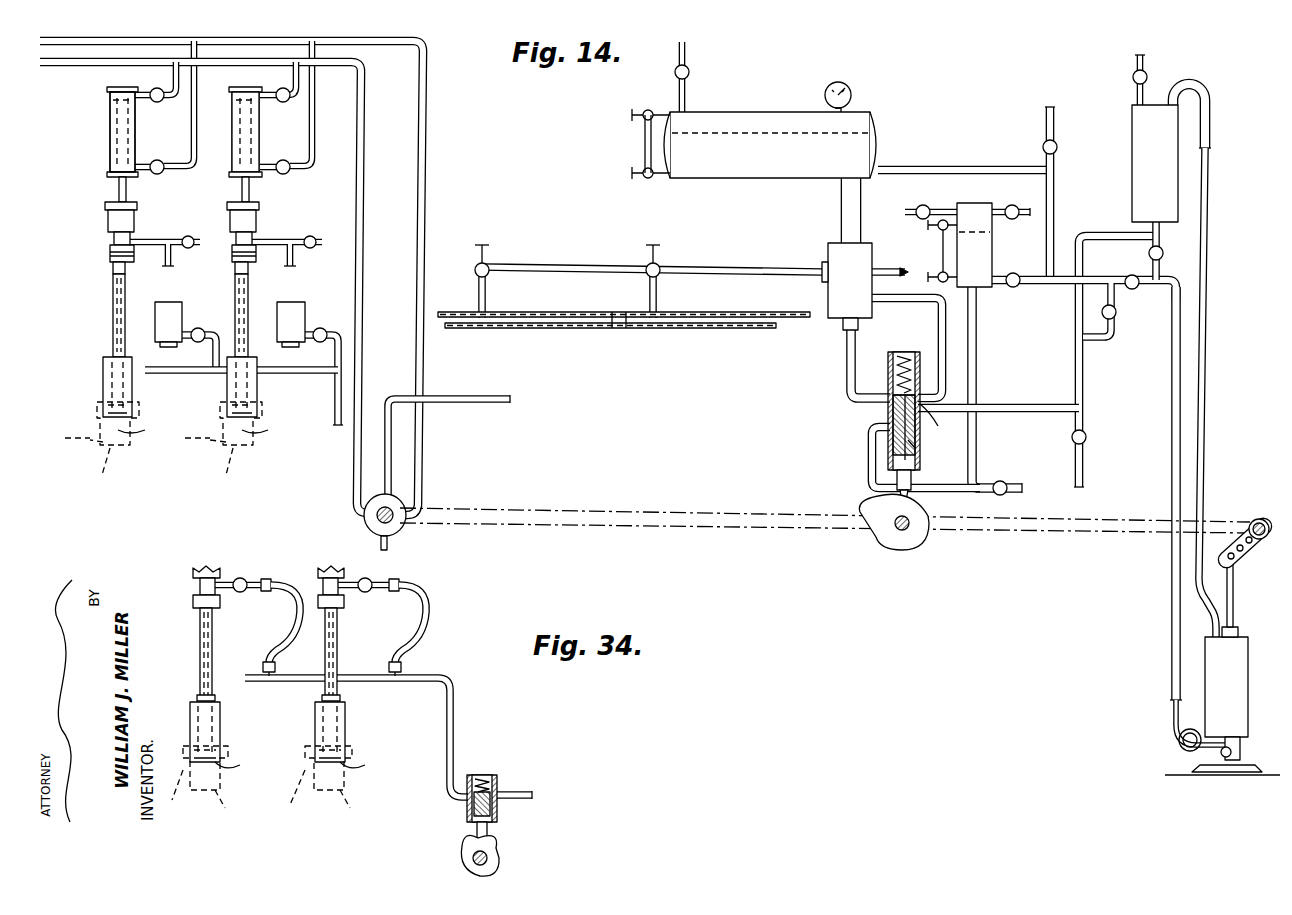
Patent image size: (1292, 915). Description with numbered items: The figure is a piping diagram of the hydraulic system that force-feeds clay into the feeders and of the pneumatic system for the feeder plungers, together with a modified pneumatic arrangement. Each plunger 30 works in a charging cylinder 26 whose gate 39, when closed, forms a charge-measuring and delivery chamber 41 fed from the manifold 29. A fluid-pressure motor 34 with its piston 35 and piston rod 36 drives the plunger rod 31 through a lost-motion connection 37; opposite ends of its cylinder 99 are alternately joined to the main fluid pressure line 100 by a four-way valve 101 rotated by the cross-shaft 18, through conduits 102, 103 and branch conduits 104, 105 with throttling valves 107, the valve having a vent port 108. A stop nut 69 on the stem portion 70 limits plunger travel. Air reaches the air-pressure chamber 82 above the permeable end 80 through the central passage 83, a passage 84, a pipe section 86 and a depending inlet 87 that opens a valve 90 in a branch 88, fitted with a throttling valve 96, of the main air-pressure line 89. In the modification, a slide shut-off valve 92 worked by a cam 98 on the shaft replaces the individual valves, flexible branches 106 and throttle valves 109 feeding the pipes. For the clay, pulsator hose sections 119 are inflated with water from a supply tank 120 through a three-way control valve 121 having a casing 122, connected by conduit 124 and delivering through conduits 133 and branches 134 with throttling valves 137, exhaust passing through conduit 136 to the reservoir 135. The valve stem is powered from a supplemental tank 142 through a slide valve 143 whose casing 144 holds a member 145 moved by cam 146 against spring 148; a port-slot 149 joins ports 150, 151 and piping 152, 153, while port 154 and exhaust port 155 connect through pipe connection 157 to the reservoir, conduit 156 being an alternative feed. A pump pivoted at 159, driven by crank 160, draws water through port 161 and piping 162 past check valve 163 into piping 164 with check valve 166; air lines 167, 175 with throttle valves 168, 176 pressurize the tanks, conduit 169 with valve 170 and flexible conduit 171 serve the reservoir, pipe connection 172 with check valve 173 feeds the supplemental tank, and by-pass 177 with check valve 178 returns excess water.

In FIG. 14, the cross-shaft 18 is at (378, 520).
In FIG. 34, the cross-shaft 18 is at (488, 858).
In FIG. 14, the charging cylinder 26 is at (134, 431).
In FIG. 34, the charging cylinder 26 is at (236, 803).
In FIG. 14, the manifold 29 is at (586, 311).
In FIG. 14, the plunger 30 is at (133, 382).
In FIG. 34, the plunger 30 is at (221, 718).
In FIG. 14, the plunger rod 31 is at (113, 338).
In FIG. 34, the plunger rod 31 is at (199, 678).
In FIG. 14, the fluid-pressure operated motor 34 is at (101, 159).
In FIG. 14, the piston 35 is at (108, 102).
In FIG. 14, the piston rod 36 is at (118, 188).
In FIG. 14, the lost-motion connection 37 is at (98, 217).
In FIG. 34, the lost-motion connection 37 is at (185, 566).
In FIG. 14, the gate 39 is at (166, 475).
In FIG. 34, the gate 39 is at (292, 808).
In FIG. 14, the charge-measuring and delivery chamber 41 is at (100, 448).
In FIG. 34, the charge-measuring and delivery chamber 41 is at (230, 775).
In FIG. 14, the adjustable stop nut 69 is at (112, 268).
In FIG. 34, the adjustable stop nut 69 is at (195, 600).
In FIG. 14, the threaded stem portion 70 is at (113, 238).
In FIG. 34, the threaded stem portion 70 is at (199, 584).
In FIG. 14, the permeable bottom-end portion 80 is at (232, 430).
In FIG. 34, the permeable bottom-end portion 80 is at (307, 754).
In FIG. 14, the air-pressure chamber 82 is at (110, 405).
In FIG. 34, the air-pressure chamber 82 is at (197, 748).
In FIG. 14, the central passage 83 is at (113, 320).
In FIG. 34, the central passage 83 is at (200, 660).
In FIG. 14, the passage 84 is at (109, 254).
In FIG. 34, the passage 84 is at (236, 592).
In FIG. 14, the horizontal pipe section 86 is at (176, 236).
In FIG. 34, the horizontal pipe section 86 is at (226, 578).
In FIG. 14, the depending inlet 87 is at (174, 265).
In FIG. 14, the branch 88 is at (214, 340).
In FIG. 14, the main air-pressure line 89 is at (300, 380).
In FIG. 34, the main air-pressure line 89 is at (453, 718).
In FIG. 14, the valve 90 is at (157, 312).
In FIG. 34, the slide type shut-off valve 92 is at (502, 773).
In FIG. 14, the throttling valve 96 is at (197, 327).
In FIG. 34, the cam 98 is at (494, 842).
In FIG. 14, the cylinder 99 is at (110, 128).
In FIG. 14, the main fluid pressure line 100 is at (453, 394).
In FIG. 14, the four-way valve 101 is at (407, 503).
In FIG. 14, the conduit 102 is at (360, 232).
In FIG. 14, the conduit 103 is at (421, 232).
In FIG. 14, the branch conduit 104 is at (172, 77).
In FIG. 14, the branch conduit 105 is at (196, 76).
In FIG. 34, the flexible branch 106 is at (296, 636).
In FIG. 14, the throttling valve 107 is at (219, 131).
In FIG. 14, the vent port 108 is at (390, 545).
In FIG. 34, the throttle valve 109 is at (248, 580).
In FIG. 14, the hose sections 119 is at (586, 330).
In FIG. 14, the supply tank 120 is at (866, 120).
In FIG. 14, the three-way control valve 121 is at (809, 266).
In FIG. 14, the cylindrical casing 122 is at (826, 297).
In FIG. 14, the conduit 124 is at (842, 205).
In FIG. 14, the conduit 133 is at (730, 268).
In FIG. 14, the branch 134 is at (486, 291).
In FIG. 14, the water reservoir 135 is at (1130, 138).
In FIG. 14, the conduit 136 is at (910, 308).
In FIG. 14, the throttling valve 137 is at (490, 265).
In FIG. 14, the supplemental water-pressure supply tank 142 is at (980, 258).
In FIG. 14, the three-way control valve 143 is at (880, 415).
In FIG. 14, the valve casing 144 is at (896, 478).
In FIG. 14, the valve member 145 is at (912, 474).
In FIG. 14, the cam 146 is at (914, 548).
In FIG. 14, the spring 148 is at (904, 362).
In FIG. 14, the port-slot 149 is at (872, 445).
In FIG. 14, the port 150 is at (862, 392).
In FIG. 14, the port 151 is at (872, 430).
In FIG. 14, the piping 152 is at (845, 361).
In FIG. 14, the piping 153 is at (975, 360).
In FIG. 14, the port 154 is at (915, 442).
In FIG. 14, the exhaust port 155 is at (940, 428).
In FIG. 14, the conduit 156 is at (1240, 682).
In FIG. 14, the pipe connection 157 is at (945, 388).
In FIG. 14, the pivot 159 is at (1232, 752).
In FIG. 14, the crank 160 is at (1252, 555).
In FIG. 14, the check-valve-controlled port 161 is at (1214, 732).
In FIG. 14, the piping 162 is at (1162, 272).
In FIG. 14, the check valve 163 is at (1164, 251).
In FIG. 14, the piping 164 is at (975, 162).
In FIG. 14, the check valve 166 is at (1137, 287).
In FIG. 14, the piping 167 is at (686, 48).
In FIG. 14, the throttling valve 168 is at (690, 74).
In FIG. 14, the conduit 169 is at (1145, 57).
In FIG. 14, the throttle valve 170 is at (1148, 78).
In FIG. 14, the flexible conduit 171 is at (1212, 110).
In FIG. 14, the pipe connection 172 is at (1032, 284).
In FIG. 14, the check valve 173 is at (1012, 286).
In FIG. 14, the piping 175 is at (945, 208).
In FIG. 14, the throttle valve 176 is at (918, 206).
In FIG. 14, the by-pass connection 177 is at (1106, 345).
In FIG. 14, the check valve 178 is at (1115, 318).